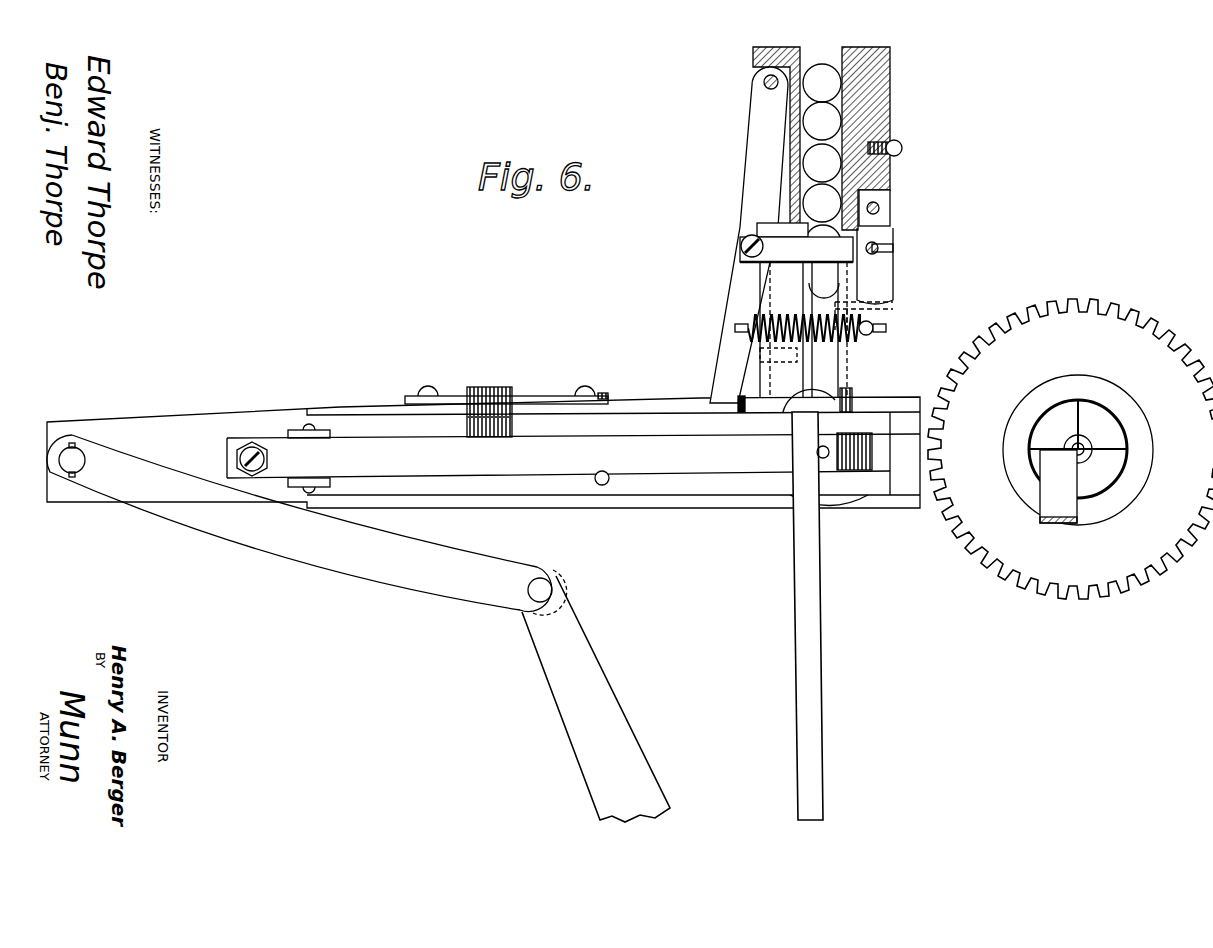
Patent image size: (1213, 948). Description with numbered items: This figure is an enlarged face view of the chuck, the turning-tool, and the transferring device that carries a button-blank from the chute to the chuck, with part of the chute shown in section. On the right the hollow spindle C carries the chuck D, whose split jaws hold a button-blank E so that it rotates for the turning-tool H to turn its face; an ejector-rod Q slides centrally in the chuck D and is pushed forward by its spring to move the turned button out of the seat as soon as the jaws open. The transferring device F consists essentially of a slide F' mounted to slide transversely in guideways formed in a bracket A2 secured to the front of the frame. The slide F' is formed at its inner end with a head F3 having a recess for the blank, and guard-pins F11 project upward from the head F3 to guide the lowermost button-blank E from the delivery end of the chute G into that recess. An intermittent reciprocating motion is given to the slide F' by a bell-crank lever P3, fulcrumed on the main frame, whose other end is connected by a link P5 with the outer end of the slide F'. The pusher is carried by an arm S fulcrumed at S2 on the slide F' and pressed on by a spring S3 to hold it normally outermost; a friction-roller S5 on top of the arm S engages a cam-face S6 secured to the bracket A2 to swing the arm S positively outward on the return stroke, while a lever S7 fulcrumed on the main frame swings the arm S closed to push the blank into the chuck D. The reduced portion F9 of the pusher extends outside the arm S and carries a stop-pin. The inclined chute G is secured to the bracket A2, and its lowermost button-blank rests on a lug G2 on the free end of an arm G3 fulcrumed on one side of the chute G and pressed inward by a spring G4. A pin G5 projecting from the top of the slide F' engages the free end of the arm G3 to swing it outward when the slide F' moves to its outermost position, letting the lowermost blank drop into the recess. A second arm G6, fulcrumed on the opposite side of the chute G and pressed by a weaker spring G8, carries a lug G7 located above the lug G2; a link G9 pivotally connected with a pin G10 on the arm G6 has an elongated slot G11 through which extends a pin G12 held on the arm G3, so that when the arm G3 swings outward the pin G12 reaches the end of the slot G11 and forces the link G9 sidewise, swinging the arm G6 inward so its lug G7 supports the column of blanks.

The slide F' is at (483, 446).
The transferring device F is at (506, 376).
The friction-roller S5 is at (494, 388).
The cam-face S6 is at (546, 397).
The arm S is at (573, 459).
The bracket A2 is at (657, 498).
The spring S3 is at (250, 450).
The fulcrum S2 is at (309, 428).
The link P5 is at (307, 525).
The bell-crank lever P3 is at (571, 706).
The head F3 is at (838, 508).
The lever S7 is at (819, 654).
The reduced portion F9 is at (821, 452).
The chute G is at (835, 142).
The button-blank E is at (822, 183).
The arm G3 is at (751, 165).
The spring G8 is at (891, 200).
The second arm G6 is at (894, 278).
The pin G10 is at (895, 250).
The lug G7 is at (894, 305).
The link G9 is at (770, 234).
The elongated slot G11 is at (742, 266).
The pin G12 is at (742, 245).
The lug G2 is at (778, 370).
The spring G4 is at (797, 322).
The pin G5 is at (741, 414).
The guard-pins F11 is at (826, 396).
The hollow spindle C is at (1050, 386).
The chuck D is at (1100, 425).
The ejector-rod Q is at (1088, 458).
The turning-tool H is at (1058, 486).